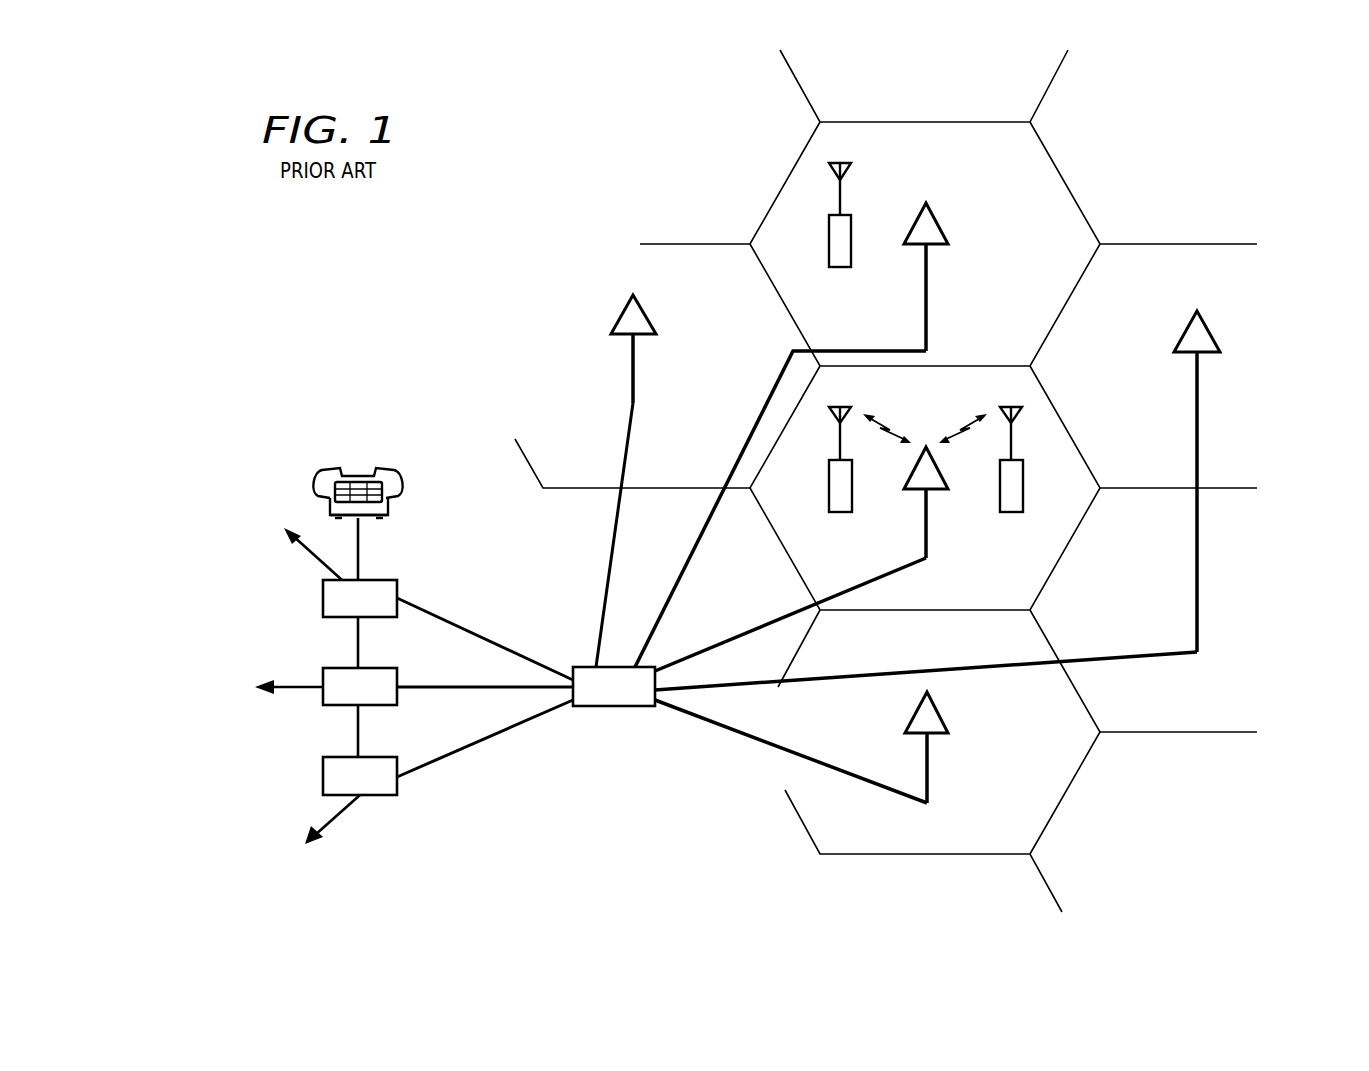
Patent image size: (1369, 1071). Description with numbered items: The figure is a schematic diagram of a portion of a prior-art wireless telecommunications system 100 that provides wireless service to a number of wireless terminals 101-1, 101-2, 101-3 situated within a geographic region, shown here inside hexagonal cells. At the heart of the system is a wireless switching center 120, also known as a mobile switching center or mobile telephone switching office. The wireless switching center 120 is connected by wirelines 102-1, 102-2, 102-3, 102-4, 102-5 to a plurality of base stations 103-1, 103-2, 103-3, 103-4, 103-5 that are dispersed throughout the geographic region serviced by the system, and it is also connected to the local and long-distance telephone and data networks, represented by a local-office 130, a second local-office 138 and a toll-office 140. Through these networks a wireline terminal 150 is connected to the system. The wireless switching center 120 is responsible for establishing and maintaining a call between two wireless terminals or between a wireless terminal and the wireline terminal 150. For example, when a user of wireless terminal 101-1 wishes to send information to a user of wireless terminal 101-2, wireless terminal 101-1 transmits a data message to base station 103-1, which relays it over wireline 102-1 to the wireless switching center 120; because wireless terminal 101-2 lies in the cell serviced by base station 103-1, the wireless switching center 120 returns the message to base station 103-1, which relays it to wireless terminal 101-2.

The wireless telecommunications system 100 is at (347, 235).
The wireless terminal 101-1 is at (840, 512).
The wireless terminal 101-2 is at (1011, 512).
The wireless terminal 101-3 is at (840, 267).
The wireline 102-1 is at (737, 636).
The wireline 102-2 is at (697, 543).
The wireline 102-3 is at (603, 606).
The wireline 102-4 is at (740, 688).
The wireline 102-5 is at (712, 727).
The base station 103-1 is at (927, 535).
The base station 103-2 is at (927, 285).
The base station 103-3 is at (634, 375).
The base station 103-4 is at (1198, 405).
The base station 103-5 is at (928, 778).
The wireless switching center 120 is at (616, 706).
The local-office 130 is at (323, 600).
The local-office 138 is at (323, 780).
The toll-office 140 is at (323, 669).
The wireline terminal 150 is at (357, 490).